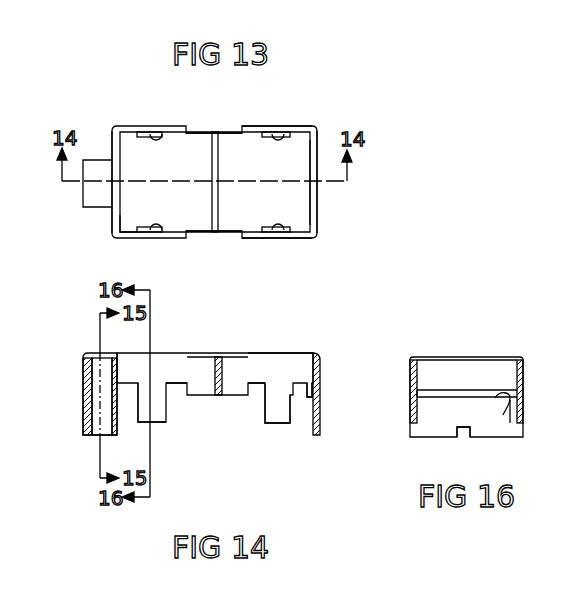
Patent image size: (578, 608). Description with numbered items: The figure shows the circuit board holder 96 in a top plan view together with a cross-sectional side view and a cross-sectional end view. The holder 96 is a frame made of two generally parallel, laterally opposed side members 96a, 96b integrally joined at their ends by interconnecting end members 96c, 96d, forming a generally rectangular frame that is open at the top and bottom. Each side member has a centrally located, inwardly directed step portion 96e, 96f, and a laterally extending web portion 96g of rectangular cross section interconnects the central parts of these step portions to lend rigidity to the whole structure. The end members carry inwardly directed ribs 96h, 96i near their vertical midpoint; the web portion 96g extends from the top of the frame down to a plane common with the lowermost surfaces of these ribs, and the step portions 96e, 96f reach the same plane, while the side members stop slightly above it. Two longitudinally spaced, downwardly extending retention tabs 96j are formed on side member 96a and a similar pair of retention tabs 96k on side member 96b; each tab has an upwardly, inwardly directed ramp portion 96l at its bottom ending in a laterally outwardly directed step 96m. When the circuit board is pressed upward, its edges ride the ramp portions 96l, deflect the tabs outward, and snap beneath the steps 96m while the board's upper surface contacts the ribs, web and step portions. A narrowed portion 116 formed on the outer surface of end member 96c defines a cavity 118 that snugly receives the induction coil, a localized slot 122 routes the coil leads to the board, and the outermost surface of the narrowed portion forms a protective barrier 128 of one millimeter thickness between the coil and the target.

In FIG. 13, the circuit board holder 96 is at (140, 108).
In FIG. 14, the circuit board holder 96 is at (325, 348).
In FIG. 16, the circuit board holder 96 is at (485, 350).
In FIG. 13, the side member 96a is at (300, 130).
In FIG. 14, the side member 96a is at (294, 362).
In FIG. 13, the side member 96b is at (300, 240).
In FIG. 13, the end member 96c is at (112, 132).
In FIG. 16, the end member 96c is at (457, 370).
In FIG. 13, the end member 96d is at (318, 222).
In FIG. 13, the step portion 96e is at (220, 131).
In FIG. 14, the step portion 96e is at (200, 368).
In FIG. 13, the step portion 96f is at (214, 239).
In FIG. 13, the web portion 96g is at (218, 176).
In FIG. 14, the web portion 96g is at (220, 368).
In FIG. 13, the rib 96h is at (120, 222).
In FIG. 14, the rib 96h is at (138, 400).
In FIG. 16, the rib 96h is at (430, 393).
In FIG. 13, the rib 96i is at (313, 200).
In FIG. 14, the rib 96i is at (320, 405).
In FIG. 13, the retention tab 96j is at (161, 134).
In FIG. 14, the retention tab 96j is at (267, 394).
In FIG. 13, the retention tab 96k is at (143, 232).
In FIG. 14, the ramp portion 96l is at (276, 415).
In FIG. 16, the ramp portion 96l is at (510, 400).
In FIG. 14, the step 96m is at (300, 395).
In FIG. 16, the step 96m is at (495, 398).
In FIG. 13, the narrowed portion 116 is at (85, 197).
In FIG. 14, the narrowed portion 116 is at (85, 358).
In FIG. 14, the cavity 118 is at (95, 432).
In FIG. 16, the localized slot 122 is at (463, 443).
In FIG. 14, the protective barrier 128 is at (84, 396).